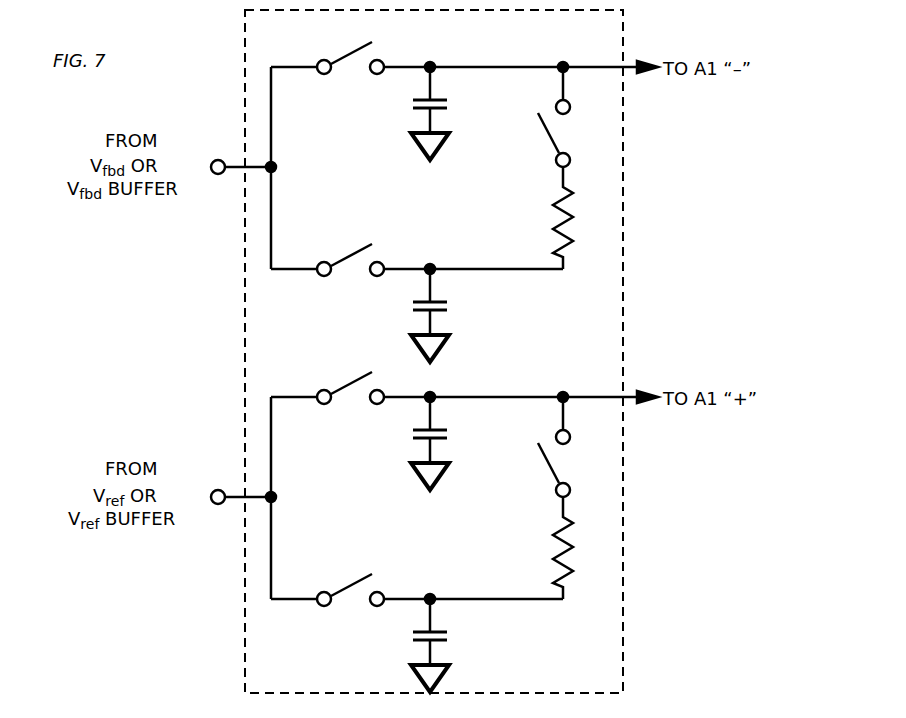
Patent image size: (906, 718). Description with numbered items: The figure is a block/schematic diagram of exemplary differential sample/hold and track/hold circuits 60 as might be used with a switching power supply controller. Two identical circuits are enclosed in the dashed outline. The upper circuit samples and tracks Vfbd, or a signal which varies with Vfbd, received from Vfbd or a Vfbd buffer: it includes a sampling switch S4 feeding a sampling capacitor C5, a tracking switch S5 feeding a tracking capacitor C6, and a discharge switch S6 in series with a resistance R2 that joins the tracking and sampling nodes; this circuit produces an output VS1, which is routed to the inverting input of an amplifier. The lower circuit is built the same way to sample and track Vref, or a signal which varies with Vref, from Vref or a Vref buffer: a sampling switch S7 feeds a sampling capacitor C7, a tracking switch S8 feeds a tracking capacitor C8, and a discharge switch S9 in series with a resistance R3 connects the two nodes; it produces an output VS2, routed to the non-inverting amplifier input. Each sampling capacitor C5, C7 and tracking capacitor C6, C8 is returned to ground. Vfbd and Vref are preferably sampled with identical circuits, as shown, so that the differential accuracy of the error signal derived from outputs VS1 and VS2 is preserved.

The differential S/H-T/H circuits 60 is at (623, 605).
The sampling switch S4 is at (350, 264).
The tracking switch S5 is at (350, 62).
The discharge switch S6 is at (572, 117).
The sampling switch S7 is at (350, 594).
The tracking switch S8 is at (350, 392).
The discharge switch S9 is at (572, 447).
The sampling capacitor C5 is at (444, 313).
The tracking capacitor C6 is at (444, 111).
The sampling capacitor C7 is at (444, 643).
The tracking capacitor C8 is at (444, 441).
The resistance R2 is at (580, 218).
The resistance R3 is at (580, 548).
The output VS1 is at (608, 54).
The output VS2 is at (608, 384).